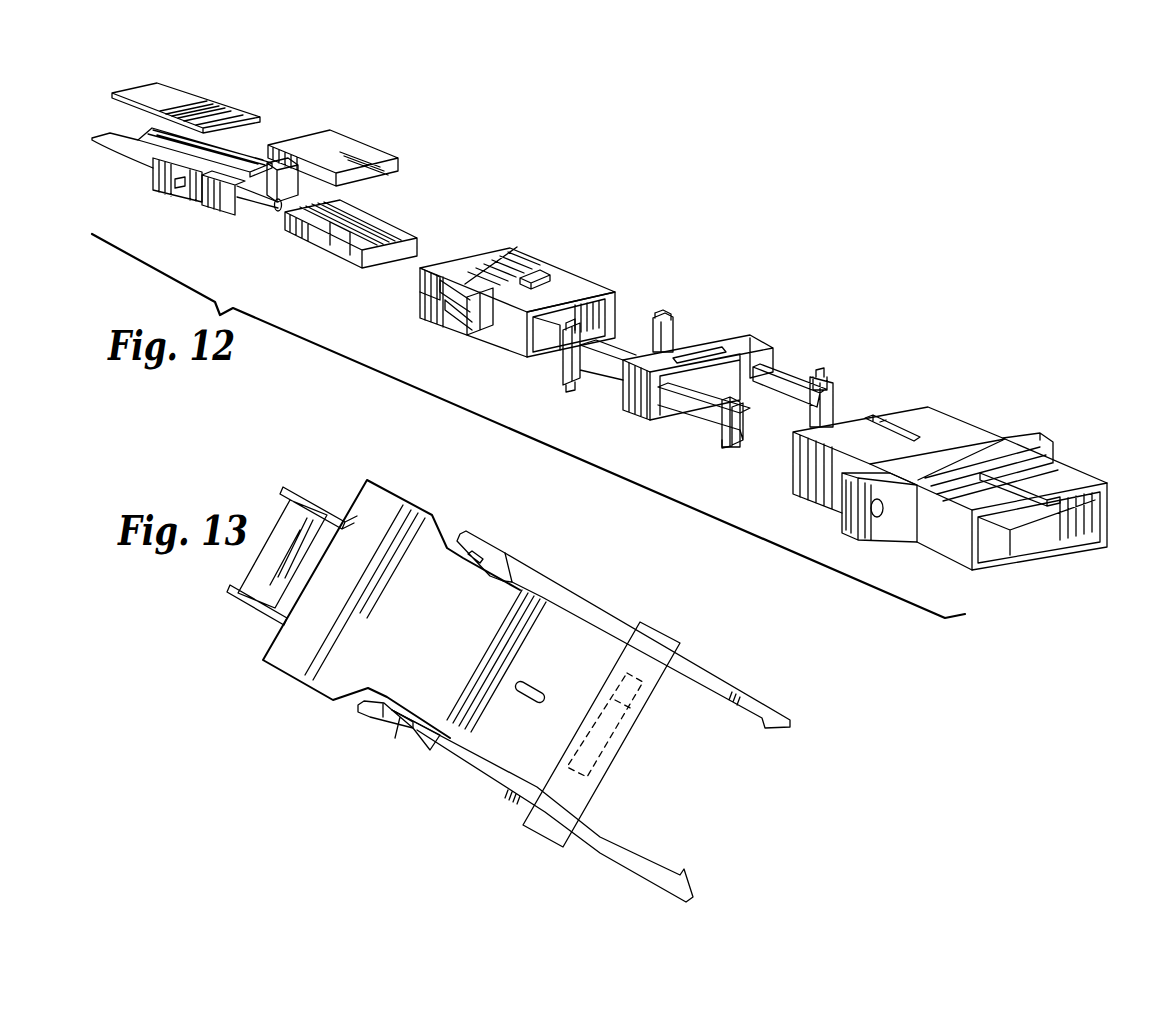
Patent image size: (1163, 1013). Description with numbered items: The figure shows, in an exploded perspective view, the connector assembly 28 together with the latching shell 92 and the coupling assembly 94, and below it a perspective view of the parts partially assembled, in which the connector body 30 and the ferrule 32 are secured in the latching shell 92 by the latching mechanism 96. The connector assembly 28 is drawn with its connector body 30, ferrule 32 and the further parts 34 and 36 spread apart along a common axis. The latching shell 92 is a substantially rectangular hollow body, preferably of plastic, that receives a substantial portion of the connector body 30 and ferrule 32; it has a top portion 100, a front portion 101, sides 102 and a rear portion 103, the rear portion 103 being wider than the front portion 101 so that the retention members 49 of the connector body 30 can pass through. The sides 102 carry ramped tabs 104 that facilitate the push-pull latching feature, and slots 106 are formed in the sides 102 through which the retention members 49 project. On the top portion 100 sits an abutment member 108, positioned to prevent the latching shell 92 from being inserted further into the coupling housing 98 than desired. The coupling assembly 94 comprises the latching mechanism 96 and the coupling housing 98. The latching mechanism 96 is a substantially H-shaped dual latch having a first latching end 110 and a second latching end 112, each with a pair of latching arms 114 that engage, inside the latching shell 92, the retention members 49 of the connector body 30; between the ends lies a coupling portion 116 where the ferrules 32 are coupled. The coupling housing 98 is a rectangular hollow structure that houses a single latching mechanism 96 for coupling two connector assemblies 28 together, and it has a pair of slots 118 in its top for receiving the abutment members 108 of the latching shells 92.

In FIG. 12, the connector assembly 28 is at (297, 107).
In FIG. 12, the connector body 30 is at (163, 173).
In FIG. 13, the connector body 30 is at (250, 604).
In FIG. 12, the ferrule 32 is at (295, 233).
In FIG. 13, the ferrule 32 is at (643, 682).
In FIG. 12, the cover plate 34 is at (213, 106).
In FIG. 12, the cap 36 is at (336, 143).
In FIG. 13, the retention members 49 is at (360, 716).
In FIG. 12, the latching shell 92 is at (541, 239).
In FIG. 13, the latching shell 92 is at (290, 659).
In FIG. 12, the coupling assembly 94 is at (871, 376).
In FIG. 12, the latching mechanism 96 is at (763, 343).
In FIG. 13, the latching mechanism 96 is at (654, 638).
In FIG. 12, the coupling housing 98 is at (943, 431).
In FIG. 12, the top portion 100 is at (491, 253).
In FIG. 12, the front portion 101 is at (617, 305).
In FIG. 12, the sides 102 is at (513, 334).
In FIG. 12, the rear portion 103 is at (414, 291).
In FIG. 12, the ramped tabs 104 is at (467, 303).
In FIG. 13, the ramped tabs 104 is at (510, 579).
In FIG. 12, the slots 106 is at (467, 318).
In FIG. 12, the abutment member 108 is at (544, 283).
In FIG. 13, the abutment member 108 is at (543, 686).
In FIG. 12, the first latching end 110 is at (693, 328).
In FIG. 12, the second latching end 112 is at (796, 368).
In FIG. 12, the latching arms 114 is at (573, 382).
In FIG. 13, the latching arms 114 is at (560, 596).
In FIG. 12, the coupling portion 116 is at (641, 418).
In FIG. 12, the slots 118 is at (883, 423).